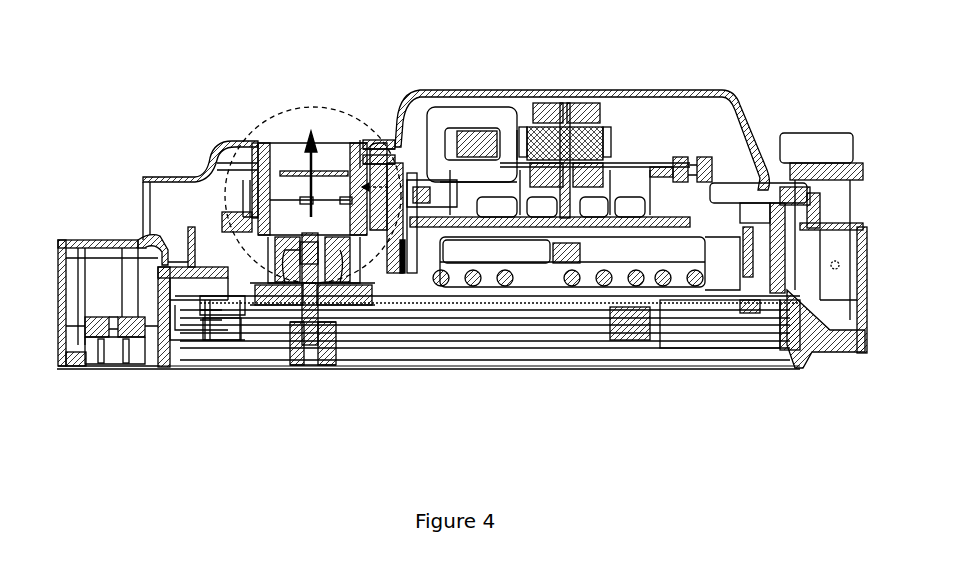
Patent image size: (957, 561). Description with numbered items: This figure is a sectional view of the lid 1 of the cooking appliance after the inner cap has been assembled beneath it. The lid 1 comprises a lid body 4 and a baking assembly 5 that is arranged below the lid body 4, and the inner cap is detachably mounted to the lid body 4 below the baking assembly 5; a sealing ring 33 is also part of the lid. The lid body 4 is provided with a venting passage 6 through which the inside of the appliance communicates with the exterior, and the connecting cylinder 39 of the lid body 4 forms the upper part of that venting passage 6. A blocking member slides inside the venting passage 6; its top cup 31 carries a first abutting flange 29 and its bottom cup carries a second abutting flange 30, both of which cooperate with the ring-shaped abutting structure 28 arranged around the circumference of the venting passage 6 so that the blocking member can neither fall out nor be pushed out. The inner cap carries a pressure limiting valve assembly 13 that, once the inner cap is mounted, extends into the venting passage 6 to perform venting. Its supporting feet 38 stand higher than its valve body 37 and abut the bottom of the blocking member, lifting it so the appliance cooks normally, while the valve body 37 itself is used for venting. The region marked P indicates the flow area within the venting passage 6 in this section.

The lid 1 is at (817, 32).
The lid body 4 is at (717, 90).
The baking assembly 5 is at (708, 206).
The venting passage 6 is at (342, 140).
The pressure limiting valve assembly 13 is at (320, 420).
The abutting structure 28 is at (258, 205).
The first abutting flange 29 is at (263, 140).
The second abutting flange 30 is at (200, 310).
The top cup 31 is at (268, 140).
The sealing ring 33 is at (234, 218).
The valve body 37 is at (328, 313).
The supporting foot 38 is at (282, 315).
The connecting cylinder 39 is at (372, 147).
The air flow region P is at (270, 118).